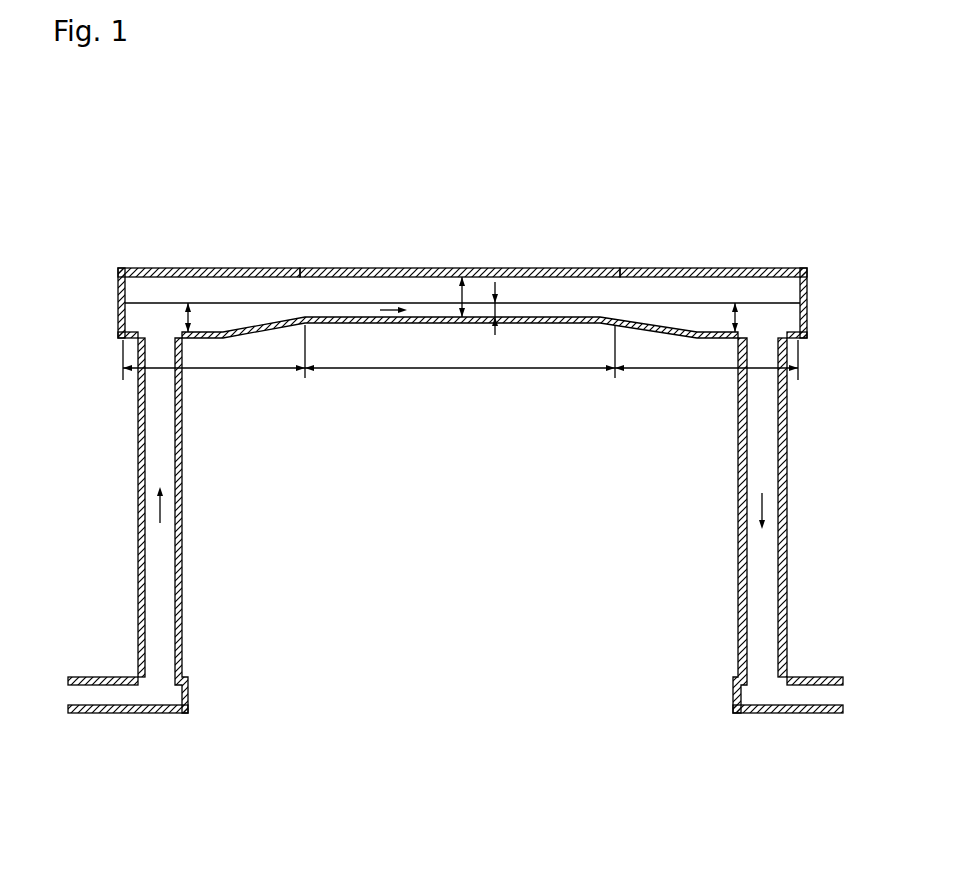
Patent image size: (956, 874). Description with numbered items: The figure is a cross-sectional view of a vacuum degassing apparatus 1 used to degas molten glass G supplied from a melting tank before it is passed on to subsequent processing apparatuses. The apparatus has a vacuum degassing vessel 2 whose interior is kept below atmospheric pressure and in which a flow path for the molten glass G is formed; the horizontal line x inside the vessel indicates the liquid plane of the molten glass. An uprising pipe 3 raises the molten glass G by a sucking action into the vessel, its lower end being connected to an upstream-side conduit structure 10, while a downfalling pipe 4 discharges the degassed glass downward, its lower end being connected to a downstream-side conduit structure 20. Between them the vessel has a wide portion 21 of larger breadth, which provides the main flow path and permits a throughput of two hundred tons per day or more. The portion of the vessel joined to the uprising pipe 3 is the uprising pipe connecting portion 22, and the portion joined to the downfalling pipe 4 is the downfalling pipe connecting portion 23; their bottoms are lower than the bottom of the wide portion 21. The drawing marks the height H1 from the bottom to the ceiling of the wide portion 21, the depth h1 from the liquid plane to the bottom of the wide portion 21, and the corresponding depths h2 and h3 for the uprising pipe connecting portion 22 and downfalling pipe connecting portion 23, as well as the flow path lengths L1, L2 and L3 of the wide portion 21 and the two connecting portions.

The vacuum degassing apparatus 1 is at (527, 140).
The vacuum degassing vessel 2 is at (540, 268).
The uprising pipe 3 is at (138, 505).
The downfalling pipe 4 is at (788, 518).
The upstream-side conduit structure 10 is at (92, 676).
The downstream-side conduit structure 20 is at (815, 676).
The wide portion 21 is at (467, 268).
The uprising pipe connecting portion 22 is at (190, 268).
The downfalling pipe connecting portion 23 is at (740, 268).
The molten glass G is at (641, 312).
The horizontal line x is at (780, 302).
The height of wide portion H1 is at (462, 296).
The depth of wide portion h1 is at (497, 306).
The depth of uprising pipe connecting portion h2 is at (192, 316).
The depth of downfalling pipe connecting portion h3 is at (730, 315).
The length of wide portion L1 is at (460, 366).
The length of uprising pipe connecting portion L2 is at (214, 366).
The length of downfalling pipe connecting portion L3 is at (706, 373).